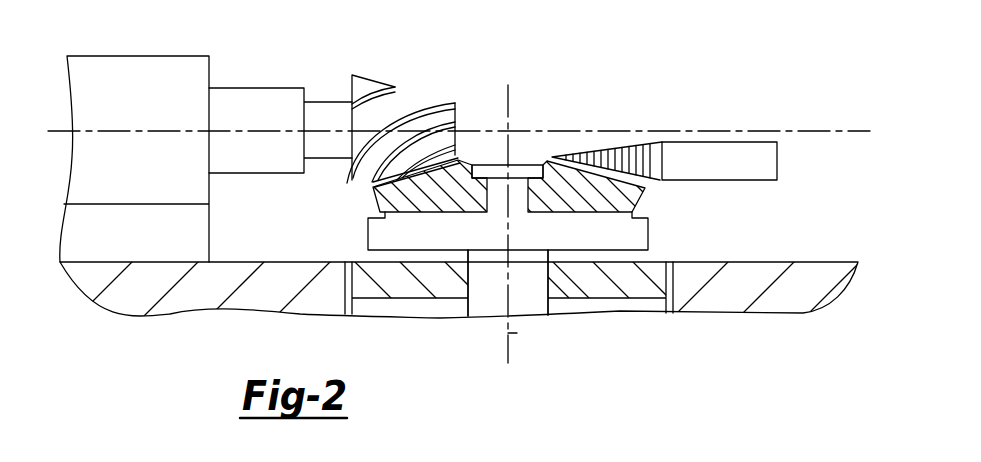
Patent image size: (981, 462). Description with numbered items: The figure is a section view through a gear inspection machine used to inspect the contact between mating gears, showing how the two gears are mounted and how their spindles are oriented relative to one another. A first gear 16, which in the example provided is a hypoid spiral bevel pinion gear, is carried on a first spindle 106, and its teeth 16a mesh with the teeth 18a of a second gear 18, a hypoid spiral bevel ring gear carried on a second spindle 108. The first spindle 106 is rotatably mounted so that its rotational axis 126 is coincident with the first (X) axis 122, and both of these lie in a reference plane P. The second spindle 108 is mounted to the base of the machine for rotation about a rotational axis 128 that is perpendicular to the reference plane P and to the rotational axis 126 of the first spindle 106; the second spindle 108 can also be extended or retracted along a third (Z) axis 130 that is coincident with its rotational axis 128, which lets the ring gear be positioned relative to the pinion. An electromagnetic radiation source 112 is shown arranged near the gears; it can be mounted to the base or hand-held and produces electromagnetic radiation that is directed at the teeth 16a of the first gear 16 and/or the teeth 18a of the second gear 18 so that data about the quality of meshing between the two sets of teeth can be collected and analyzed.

The first gear 16 is at (403, 97).
The teeth of the first gear 16a is at (432, 100).
The second gear 18 is at (520, 159).
The teeth of the second gear 18a is at (570, 157).
The first spindle 106 is at (289, 88).
The second spindle 108 is at (488, 298).
The electromagnetic radiation source 112 is at (777, 162).
The first (X) axis 122 is at (134, 138).
The rotational axis of the first spindle 126 is at (183, 131).
The rotational axis of the second spindle 128 is at (610, 356).
The third (Z) axis 130 is at (517, 333).
The reference plane P is at (808, 130).